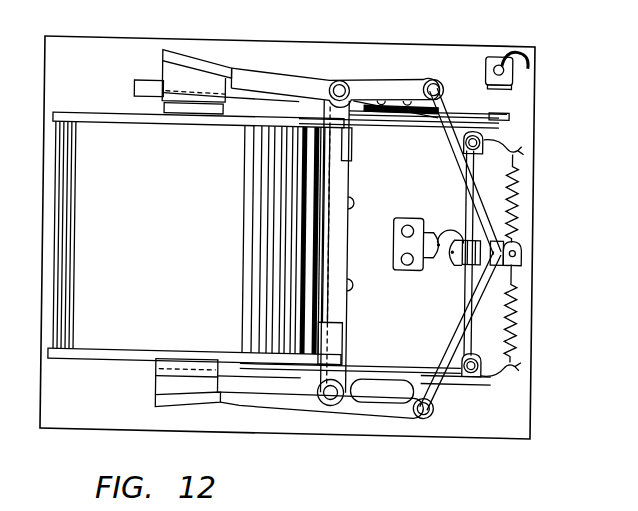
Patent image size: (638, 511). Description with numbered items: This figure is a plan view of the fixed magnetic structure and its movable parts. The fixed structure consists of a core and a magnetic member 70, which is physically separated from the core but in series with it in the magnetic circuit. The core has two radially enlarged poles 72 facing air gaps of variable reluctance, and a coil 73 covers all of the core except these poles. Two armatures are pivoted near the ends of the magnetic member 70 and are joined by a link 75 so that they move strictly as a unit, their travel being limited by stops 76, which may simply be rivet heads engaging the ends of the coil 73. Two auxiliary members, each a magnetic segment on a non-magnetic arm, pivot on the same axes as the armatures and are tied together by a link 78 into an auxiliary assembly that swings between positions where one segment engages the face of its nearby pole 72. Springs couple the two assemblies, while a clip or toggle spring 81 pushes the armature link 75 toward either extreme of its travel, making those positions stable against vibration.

The magnetic member 70 is at (355, 166).
The poles 72 is at (172, 104).
The coil 73 is at (163, 253).
The link 75 is at (469, 281).
The stops 76 is at (141, 95).
The link 78 is at (449, 351).
The clip or toggle spring 81 is at (449, 211).